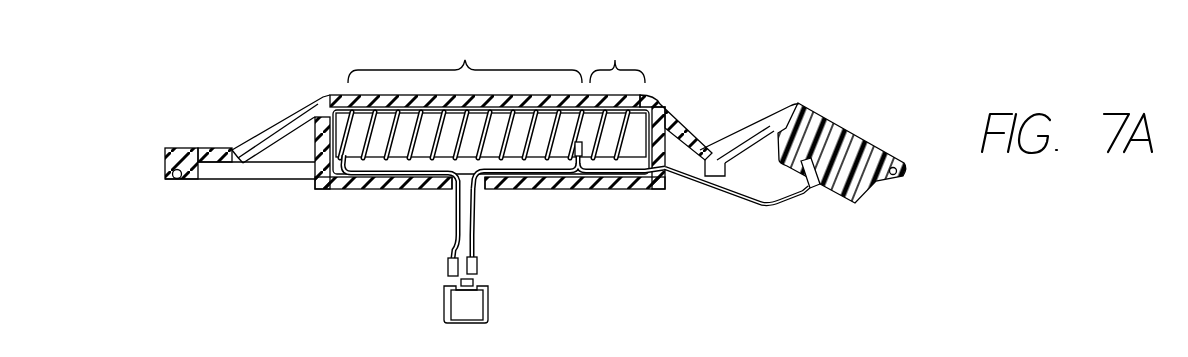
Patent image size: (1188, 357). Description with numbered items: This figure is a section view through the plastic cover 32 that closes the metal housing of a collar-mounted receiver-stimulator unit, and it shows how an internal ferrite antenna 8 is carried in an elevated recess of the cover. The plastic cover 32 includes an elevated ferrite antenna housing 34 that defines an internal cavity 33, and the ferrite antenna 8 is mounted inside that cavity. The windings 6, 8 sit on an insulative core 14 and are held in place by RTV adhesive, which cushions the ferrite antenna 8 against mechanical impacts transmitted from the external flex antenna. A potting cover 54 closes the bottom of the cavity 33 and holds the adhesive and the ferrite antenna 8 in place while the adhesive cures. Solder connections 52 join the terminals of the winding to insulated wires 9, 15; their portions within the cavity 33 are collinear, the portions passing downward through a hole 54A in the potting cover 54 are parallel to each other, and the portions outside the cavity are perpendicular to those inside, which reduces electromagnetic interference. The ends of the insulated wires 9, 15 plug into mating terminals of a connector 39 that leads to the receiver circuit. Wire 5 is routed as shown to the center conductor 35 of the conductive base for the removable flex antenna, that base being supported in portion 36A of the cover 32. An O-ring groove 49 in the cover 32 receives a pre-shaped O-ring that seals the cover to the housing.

The wire 5 is at (762, 205).
The winding 6 is at (617, 57).
The ferrite antenna 8 is at (465, 59).
The insulated wire 9 is at (476, 242).
The insulative core 14 is at (344, 122).
The insulated wire 15 is at (455, 240).
The plastic cover 32 is at (176, 145).
The internal cavity 33 is at (390, 99).
The elevated ferrite antenna housing 34 is at (270, 125).
The center conductor 35 is at (811, 190).
The portion of cover 36A is at (838, 142).
The connector 39 is at (492, 303).
The O-ring groove 49 is at (177, 180).
The solder connection 52 is at (363, 182).
The potting cover 54 is at (388, 189).
The hole 54A is at (480, 193).